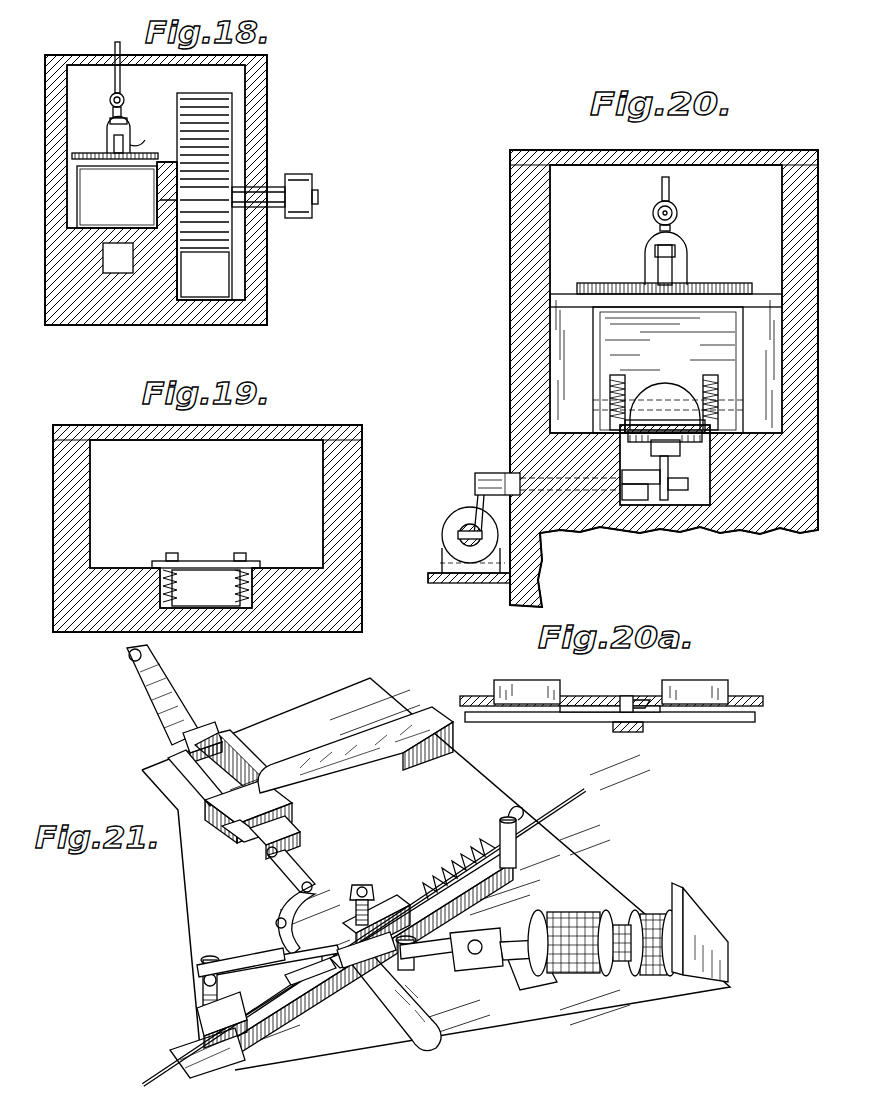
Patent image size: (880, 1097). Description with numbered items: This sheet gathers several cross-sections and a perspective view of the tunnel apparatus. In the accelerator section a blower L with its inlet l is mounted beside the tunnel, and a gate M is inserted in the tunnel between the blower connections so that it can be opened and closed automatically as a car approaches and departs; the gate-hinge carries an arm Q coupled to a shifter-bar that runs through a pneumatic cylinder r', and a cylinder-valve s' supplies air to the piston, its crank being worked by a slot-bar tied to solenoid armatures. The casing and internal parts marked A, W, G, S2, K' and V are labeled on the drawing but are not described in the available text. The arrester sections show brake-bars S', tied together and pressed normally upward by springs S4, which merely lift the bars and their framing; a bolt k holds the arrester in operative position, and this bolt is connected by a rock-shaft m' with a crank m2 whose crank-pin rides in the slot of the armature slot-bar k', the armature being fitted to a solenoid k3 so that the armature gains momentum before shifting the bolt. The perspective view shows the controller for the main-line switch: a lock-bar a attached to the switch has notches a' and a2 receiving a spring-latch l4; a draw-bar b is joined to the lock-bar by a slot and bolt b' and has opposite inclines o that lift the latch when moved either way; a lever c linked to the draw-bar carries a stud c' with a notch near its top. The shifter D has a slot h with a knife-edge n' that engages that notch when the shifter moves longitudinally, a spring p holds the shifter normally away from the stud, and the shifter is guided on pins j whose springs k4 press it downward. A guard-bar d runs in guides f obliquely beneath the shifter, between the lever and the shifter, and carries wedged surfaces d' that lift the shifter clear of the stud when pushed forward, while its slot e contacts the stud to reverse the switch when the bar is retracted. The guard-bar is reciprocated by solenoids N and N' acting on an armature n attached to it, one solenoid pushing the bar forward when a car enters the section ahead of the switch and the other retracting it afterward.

In FIG. 18, the blower L is at (215, 95).
In FIG. 18, the box A is at (117, 197).
In FIG. 18, the weight W is at (118, 258).
In FIG. 18, the gate M is at (148, 152).
In FIG. 18, the pneumatic cylinder r' is at (108, 135).
In FIG. 20, the pneumatic cylinder r' is at (657, 258).
In FIG. 18, the arm Q is at (136, 142).
In FIG. 18, the cylinder-valve s' is at (107, 79).
In FIG. 20, the cylinder-valve s' is at (653, 204).
In FIG. 18, the inlet l is at (177, 230).
In FIG. 19, the casing G is at (205, 464).
In FIG. 20, the casing G is at (510, 287).
In FIG. 19, the springs S4 is at (232, 586).
In FIG. 19, the plate S2 is at (208, 561).
In FIG. 19, the brake-bars S' is at (211, 565).
In FIG. 20, the brake-bars S' is at (668, 397).
In FIG. 20, the rack shelf K' is at (666, 280).
In FIG. 20, the valve box V is at (668, 370).
In FIG. 20, the bolt k is at (665, 465).
In FIG. 20, the rock-shaft m' is at (542, 462).
In FIG. 20, the crank m2 is at (475, 520).
In FIG. 20, the solenoid k3 is at (448, 532).
In FIG. 20, the slot-bar k' is at (447, 542).
In FIG. 20A, the shifter D is at (570, 697).
In FIG. 21, the shifter D is at (205, 1068).
In FIG. 20A, the guard-bar d is at (610, 732).
In FIG. 21, the guard-bar d is at (358, 964).
In FIG. 20A, the wedged surfaces d' is at (632, 729).
In FIG. 21, the wedged surfaces d' is at (310, 987).
In FIG. 20A, the lever c is at (629, 741).
In FIG. 21, the lever c is at (346, 968).
In FIG. 20A, the stud c' is at (624, 683).
In FIG. 21, the stud c' is at (323, 924).
In FIG. 20A, the knife-edge n' is at (648, 680).
In FIG. 21, the knife-edge n' is at (342, 983).
In FIG. 21, the lock-bar a is at (163, 695).
In FIG. 21, the draw-bar b is at (185, 742).
In FIG. 21, the slot and bolt b' is at (196, 778).
In FIG. 21, the inclines o is at (210, 800).
In FIG. 21, the notch a' is at (233, 761).
In FIG. 21, the spring-latch l4 is at (355, 750).
In FIG. 21, the notch a2 is at (280, 800).
In FIG. 21, the slot h is at (276, 945).
In FIG. 21, the pins j is at (362, 885).
In FIG. 21, the spring p is at (455, 858).
In FIG. 21, the guides f is at (208, 956).
In FIG. 21, the springs k4 is at (198, 1012).
In FIG. 21, the slot e is at (366, 950).
In FIG. 21, the solenoid N is at (571, 924).
In FIG. 21, the solenoid N' is at (677, 919).
In FIG. 21, the armature n is at (616, 963).